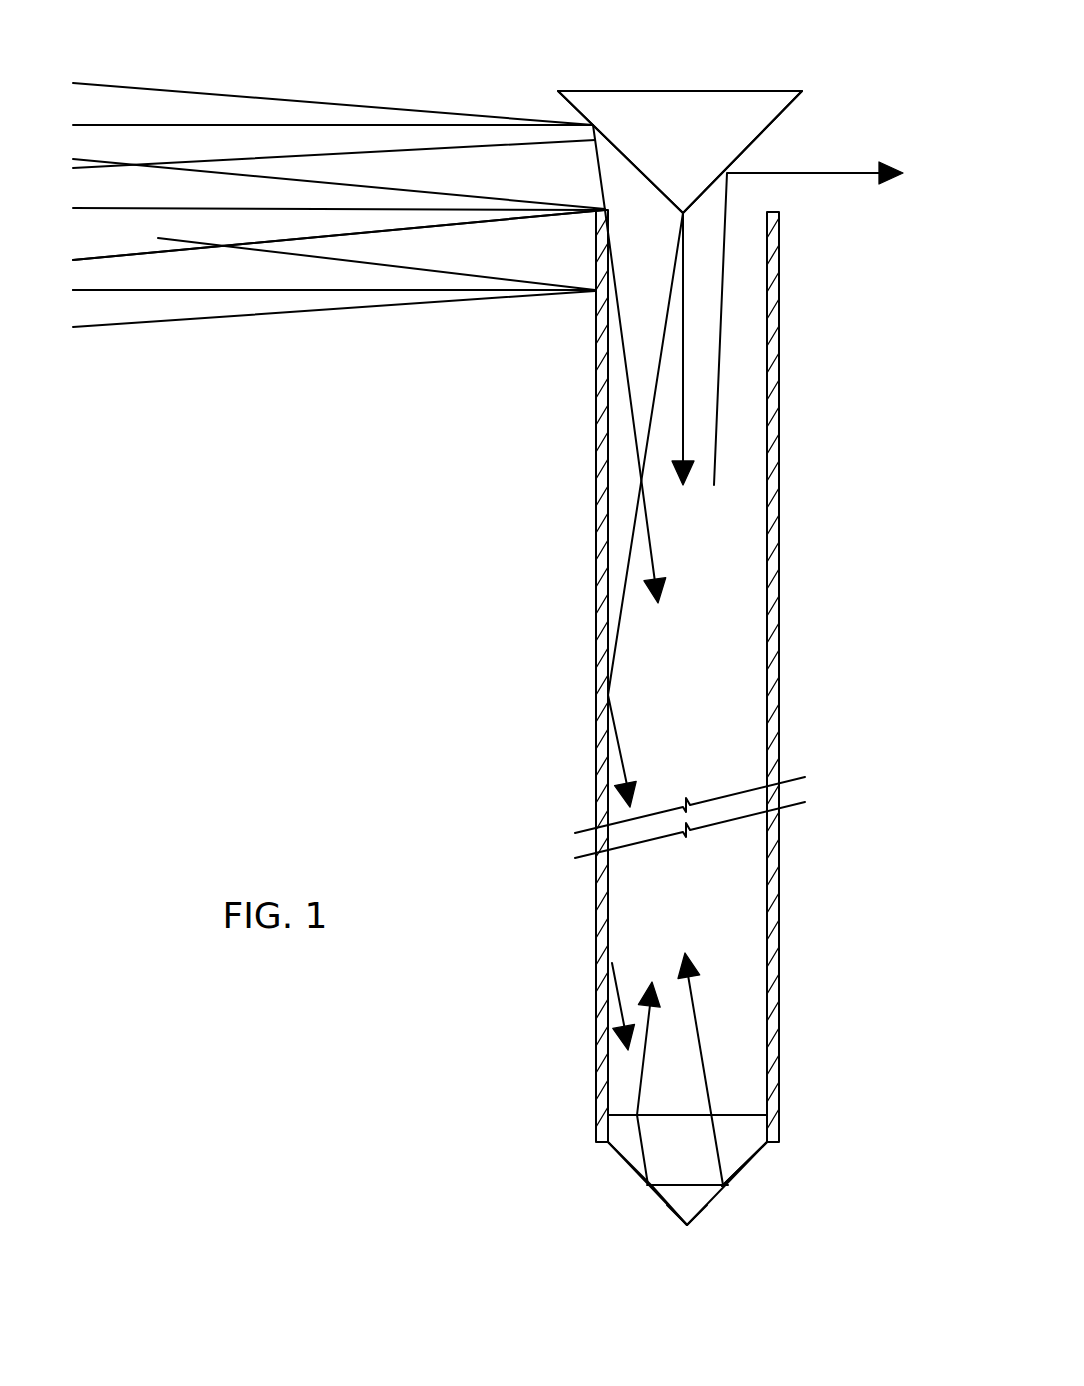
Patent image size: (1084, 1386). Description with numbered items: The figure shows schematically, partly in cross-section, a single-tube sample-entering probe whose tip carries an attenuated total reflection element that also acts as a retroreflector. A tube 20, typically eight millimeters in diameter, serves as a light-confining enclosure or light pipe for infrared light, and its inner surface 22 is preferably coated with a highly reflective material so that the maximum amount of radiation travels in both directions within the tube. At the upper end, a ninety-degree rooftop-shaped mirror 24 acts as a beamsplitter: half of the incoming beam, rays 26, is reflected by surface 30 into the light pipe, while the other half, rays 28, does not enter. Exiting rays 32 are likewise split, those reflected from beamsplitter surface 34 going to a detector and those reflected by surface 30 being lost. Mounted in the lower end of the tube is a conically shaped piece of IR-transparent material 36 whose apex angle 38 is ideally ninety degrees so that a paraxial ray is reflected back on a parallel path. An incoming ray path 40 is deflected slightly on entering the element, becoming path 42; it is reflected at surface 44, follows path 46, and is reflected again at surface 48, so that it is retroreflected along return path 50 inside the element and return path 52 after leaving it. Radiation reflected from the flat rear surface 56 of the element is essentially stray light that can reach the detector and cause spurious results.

The tube 20 is at (790, 420).
The inner surface 22 is at (767, 637).
The rooftop-shaped mirror 24 is at (695, 90).
The rays 26 is at (393, 103).
The rays 28 is at (193, 252).
The surface 30 is at (628, 150).
The exiting rays 32 is at (810, 173).
The beamsplitter surface 34 is at (760, 128).
The IR-transparent material 36 is at (728, 1130).
The apex angle 38 is at (695, 1202).
The incoming ray path 40 is at (633, 1068).
The path 42 is at (637, 1150).
The surface 44 is at (657, 1193).
The path 46 is at (668, 1196).
The surface 48 is at (740, 1175).
The return path 50 is at (720, 1143).
The return path 52 is at (693, 1000).
The flat rear surface 56 is at (637, 1115).